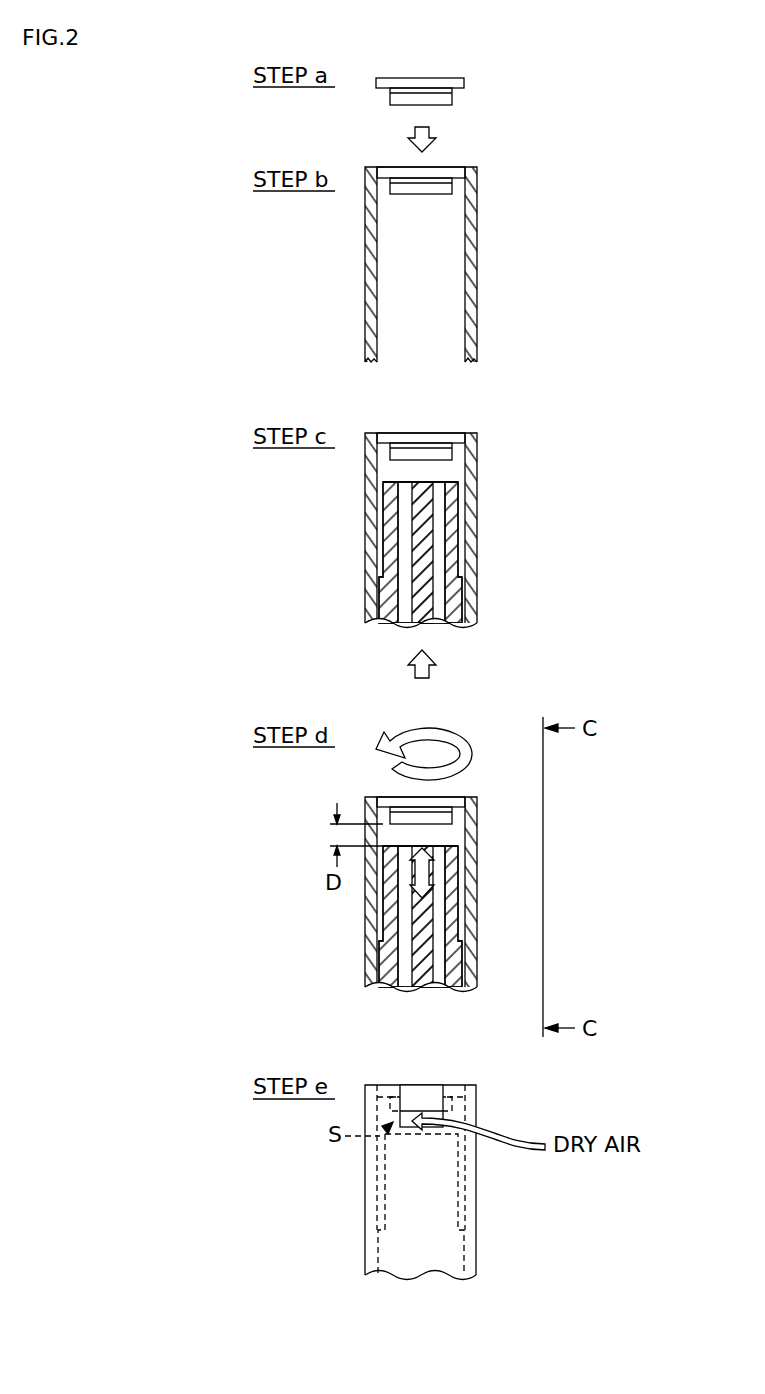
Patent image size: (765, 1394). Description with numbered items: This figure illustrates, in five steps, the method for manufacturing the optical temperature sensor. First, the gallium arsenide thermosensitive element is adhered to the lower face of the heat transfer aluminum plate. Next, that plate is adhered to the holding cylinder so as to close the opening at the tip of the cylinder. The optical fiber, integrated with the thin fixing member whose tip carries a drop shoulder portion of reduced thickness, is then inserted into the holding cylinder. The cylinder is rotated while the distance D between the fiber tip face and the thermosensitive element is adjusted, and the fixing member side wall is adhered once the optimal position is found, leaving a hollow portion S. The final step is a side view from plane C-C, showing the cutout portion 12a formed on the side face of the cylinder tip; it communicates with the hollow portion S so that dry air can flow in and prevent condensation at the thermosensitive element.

The cutout portion 12a is at (400, 1100).